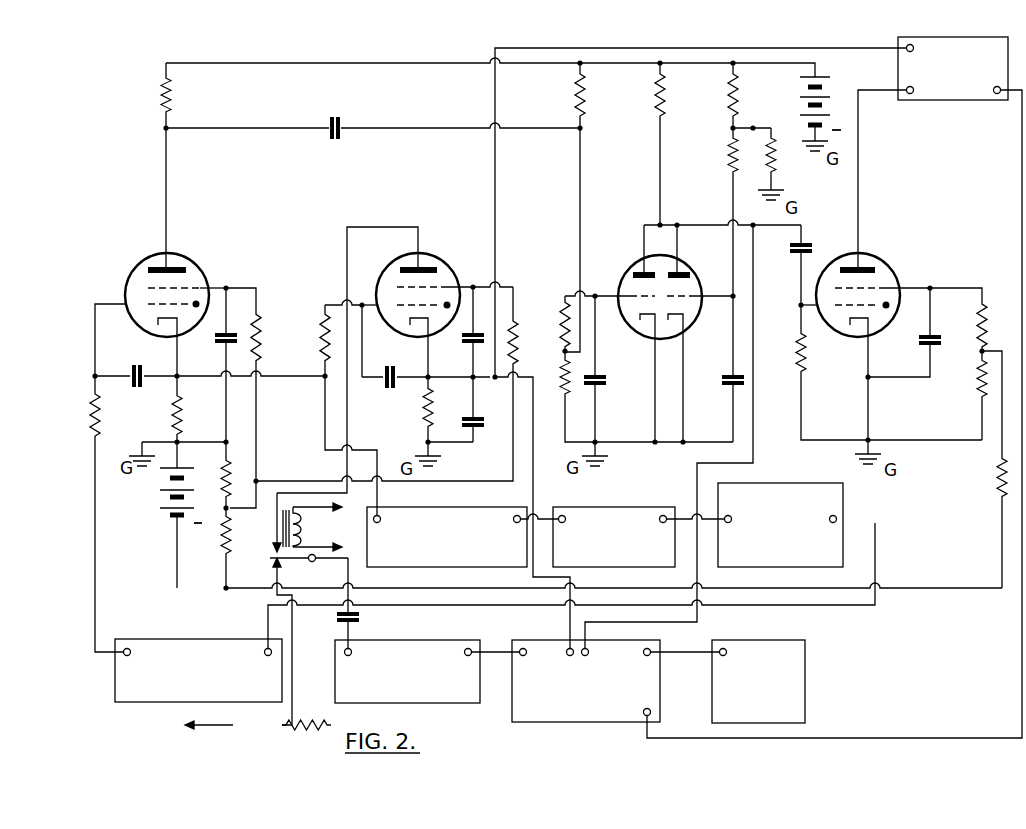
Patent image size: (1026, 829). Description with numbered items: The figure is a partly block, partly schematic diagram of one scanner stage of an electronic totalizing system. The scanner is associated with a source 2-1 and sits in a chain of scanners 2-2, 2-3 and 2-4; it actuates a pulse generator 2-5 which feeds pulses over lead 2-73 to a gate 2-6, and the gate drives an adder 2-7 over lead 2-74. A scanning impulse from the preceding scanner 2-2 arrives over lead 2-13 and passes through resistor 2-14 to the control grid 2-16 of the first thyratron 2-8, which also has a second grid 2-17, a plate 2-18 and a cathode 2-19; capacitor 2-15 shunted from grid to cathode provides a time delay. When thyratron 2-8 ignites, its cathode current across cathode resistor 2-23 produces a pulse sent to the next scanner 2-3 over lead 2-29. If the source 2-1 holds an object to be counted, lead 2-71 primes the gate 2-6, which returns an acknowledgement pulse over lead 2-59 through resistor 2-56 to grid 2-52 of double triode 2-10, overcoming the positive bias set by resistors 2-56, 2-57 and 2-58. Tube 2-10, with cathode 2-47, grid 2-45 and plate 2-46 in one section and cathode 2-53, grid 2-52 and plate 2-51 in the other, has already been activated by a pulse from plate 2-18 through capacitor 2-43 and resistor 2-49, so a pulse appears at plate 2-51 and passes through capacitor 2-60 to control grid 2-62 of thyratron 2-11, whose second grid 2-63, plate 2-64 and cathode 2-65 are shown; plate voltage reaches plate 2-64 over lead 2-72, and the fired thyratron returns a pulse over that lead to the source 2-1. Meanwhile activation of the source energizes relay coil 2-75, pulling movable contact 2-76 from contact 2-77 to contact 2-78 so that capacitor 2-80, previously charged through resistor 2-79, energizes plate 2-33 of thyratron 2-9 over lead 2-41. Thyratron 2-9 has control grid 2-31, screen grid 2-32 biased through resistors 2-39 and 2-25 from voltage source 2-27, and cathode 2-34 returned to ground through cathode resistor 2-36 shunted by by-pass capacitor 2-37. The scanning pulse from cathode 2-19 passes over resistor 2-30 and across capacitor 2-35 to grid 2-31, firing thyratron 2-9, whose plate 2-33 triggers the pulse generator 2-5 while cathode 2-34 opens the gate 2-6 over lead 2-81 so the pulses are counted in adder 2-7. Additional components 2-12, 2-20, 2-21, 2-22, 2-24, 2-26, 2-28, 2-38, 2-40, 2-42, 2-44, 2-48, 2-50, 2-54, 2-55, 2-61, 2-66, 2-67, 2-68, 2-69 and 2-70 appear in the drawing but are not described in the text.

The source 1 is at (945, 101).
The preceding scanner 2 is at (184, 639).
The next scanner 3 is at (456, 507).
The scanner 4 is at (617, 507).
The pulse generator 5 is at (376, 640).
The gate 6 is at (557, 645).
The adder 7 is at (788, 649).
The first tube 8 is at (135, 278).
The thyratron 9 is at (410, 259).
The double triode tube 10 is at (660, 254).
The thyratron 11 is at (826, 270).
The conductor 12 is at (266, 631).
The lead 13 is at (97, 596).
The resistor 14 is at (104, 420).
The capacitor 15 is at (137, 390).
The control grid electrode 16 is at (132, 303).
The second grid 17 is at (196, 288).
The plate 18 is at (183, 268).
The cathode 19 is at (170, 328).
The resistor 20 is at (175, 88).
The supply conductor 21 is at (296, 63).
The battery 22 is at (804, 90).
The cathode resistor 23 is at (181, 420).
The resistor 24 is at (261, 340).
The resistor 25 is at (232, 471).
The resistor 26 is at (229, 552).
The voltage source 27 is at (165, 493).
The capacitor 28 is at (217, 338).
The lead 29 is at (263, 378).
The resistor 30 is at (321, 337).
The control element 31 is at (398, 299).
The screen grid 32 is at (441, 285).
The plate 33 is at (422, 266).
The cathode 34 is at (419, 328).
The capacitor 35 is at (387, 387).
The cathode resistor 36 is at (424, 412).
The by-pass capacitor 37 is at (479, 419).
The capacitor 38 is at (461, 338).
The resistor 39 is at (515, 315).
The conductor 40 is at (497, 209).
The lead 41 is at (346, 248).
The resistor 42 is at (576, 98).
The capacitor 43 is at (335, 119).
The conductor 44 is at (581, 182).
The grid 45 is at (638, 292).
The plate 46 is at (636, 268).
The cathode 47 is at (651, 323).
The capacitor 48 is at (602, 386).
The resistor 49 is at (562, 330).
The resistor 50 is at (562, 378).
The plate 51 is at (684, 268).
The grid 52 is at (688, 292).
The cathode 53 is at (684, 323).
The capacitor 54 is at (727, 385).
The resistor 55 is at (656, 98).
The resistor 56 is at (728, 158).
The resistor 57 is at (729, 98).
The resistor 58 is at (776, 172).
The lead 59 is at (697, 463).
The capacitor 60 is at (794, 250).
The resistor 61 is at (807, 360).
The control grid electrode 62 is at (876, 312).
The second grid 63 is at (886, 287).
The plate 64 is at (870, 268).
The cathode 65 is at (858, 327).
The capacitor 66 is at (935, 343).
The resistor 67 is at (977, 317).
The resistor 68 is at (978, 384).
The resistor 69 is at (1000, 470).
The conductor 70 is at (926, 588).
The lead 71 is at (1021, 638).
The lead 72 is at (859, 201).
The lead 73 is at (494, 650).
The lead 74 is at (687, 655).
The relay coil 75 is at (758, 488).
The movable contact 76 is at (300, 558).
The contact 77 is at (270, 558).
The contact 78 is at (271, 547).
The resistor 79 is at (268, 732).
The capacitor 80 is at (340, 617).
The lead 81 is at (584, 458).